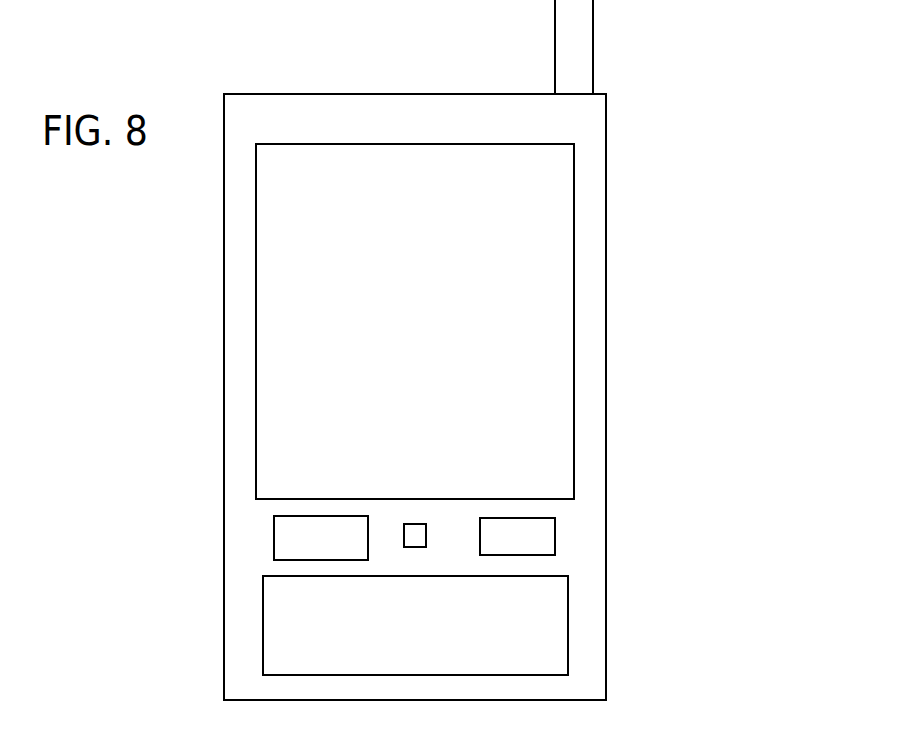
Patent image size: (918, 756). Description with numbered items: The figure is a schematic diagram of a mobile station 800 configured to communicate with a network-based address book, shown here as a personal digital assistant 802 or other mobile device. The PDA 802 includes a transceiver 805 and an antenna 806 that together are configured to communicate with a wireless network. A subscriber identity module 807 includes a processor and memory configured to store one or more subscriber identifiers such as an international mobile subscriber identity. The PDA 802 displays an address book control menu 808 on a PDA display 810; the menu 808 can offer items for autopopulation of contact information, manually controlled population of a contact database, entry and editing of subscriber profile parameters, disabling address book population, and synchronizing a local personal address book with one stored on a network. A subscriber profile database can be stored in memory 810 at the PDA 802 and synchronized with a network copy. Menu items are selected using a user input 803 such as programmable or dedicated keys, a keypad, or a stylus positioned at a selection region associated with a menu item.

The mobile communication device 800 is at (606, 396).
The personal digital assistant 802 is at (606, 244).
The user input 803 is at (568, 624).
The transceiver 805 is at (555, 536).
The antenna 806 is at (593, 29).
The subscriber identity module 807 is at (274, 537).
The address book control menu 808 is at (256, 296).
The PDA display 810 is at (574, 322).